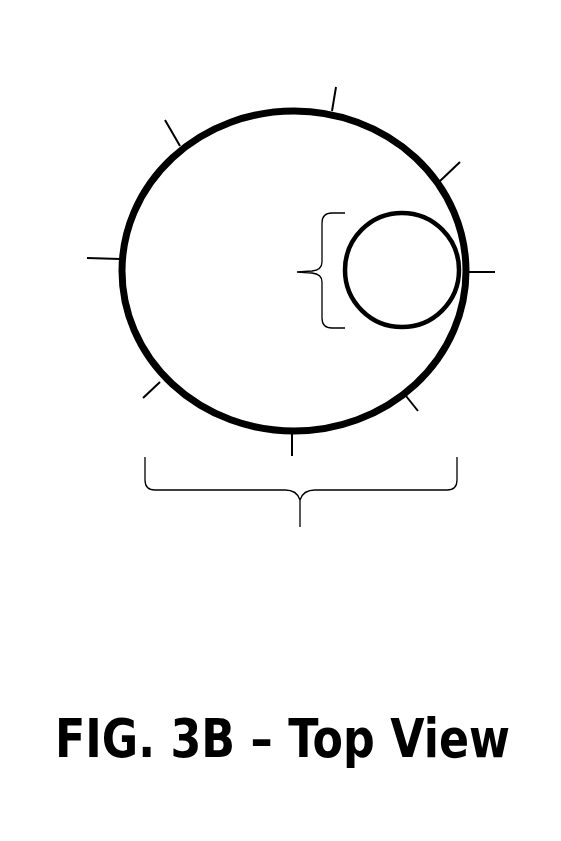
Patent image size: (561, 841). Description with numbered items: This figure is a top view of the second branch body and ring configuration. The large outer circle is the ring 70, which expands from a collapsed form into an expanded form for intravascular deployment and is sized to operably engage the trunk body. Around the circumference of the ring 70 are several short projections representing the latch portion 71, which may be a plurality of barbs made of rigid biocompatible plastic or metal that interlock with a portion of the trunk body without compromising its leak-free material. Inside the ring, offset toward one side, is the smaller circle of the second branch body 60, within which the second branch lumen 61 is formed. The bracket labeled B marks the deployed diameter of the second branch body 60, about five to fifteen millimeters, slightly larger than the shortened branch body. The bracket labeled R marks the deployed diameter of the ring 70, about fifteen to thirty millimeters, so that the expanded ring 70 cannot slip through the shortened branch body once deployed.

The ring 70 is at (234, 108).
The latch portion 71 is at (172, 133).
The second branch body 60 is at (391, 200).
The second branch lumen 61 is at (405, 278).
The second branch body deployed diameter B is at (307, 270).
The ring deployed diameter R is at (301, 513).